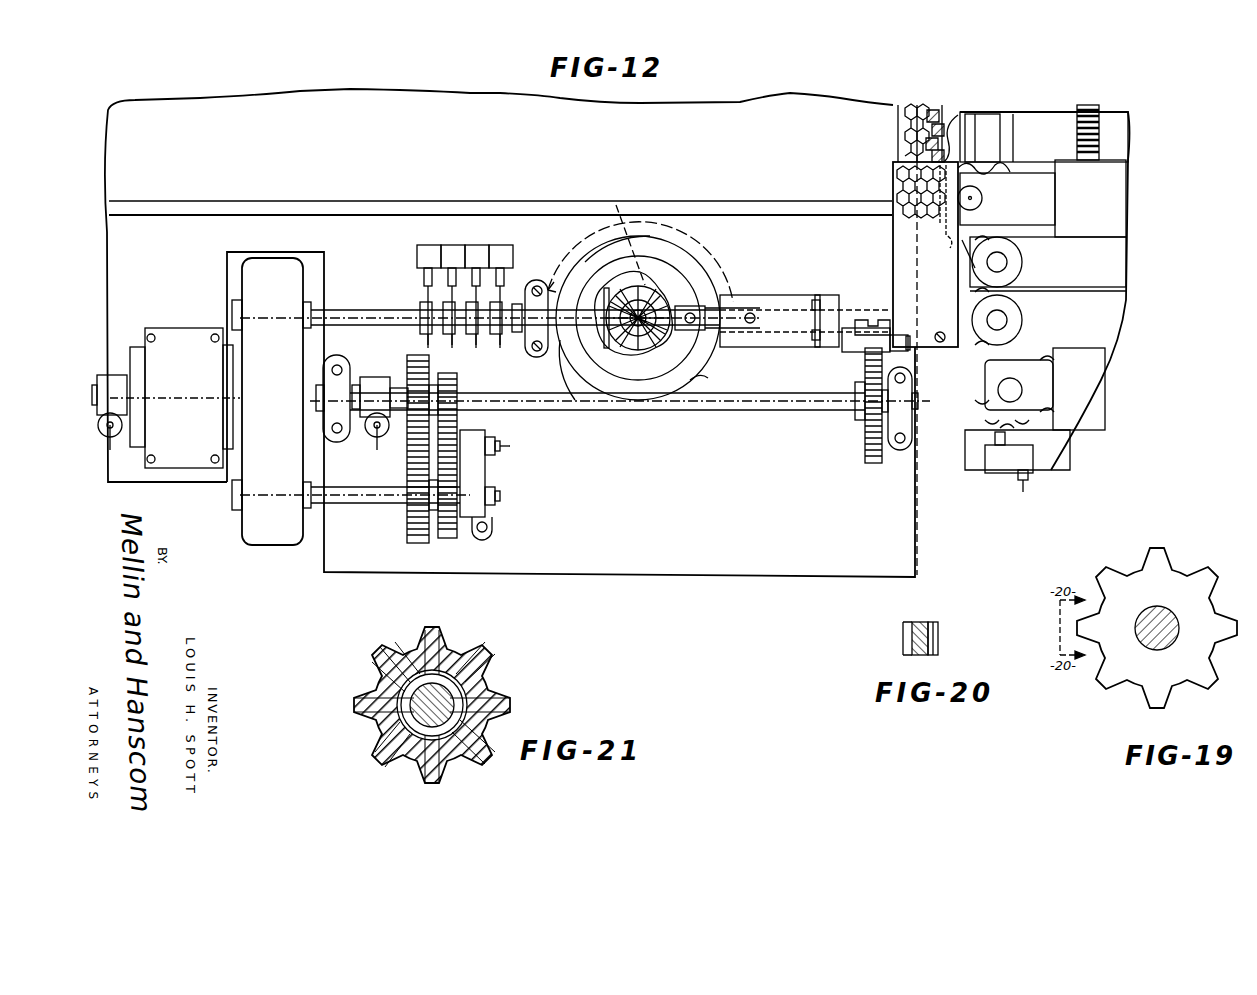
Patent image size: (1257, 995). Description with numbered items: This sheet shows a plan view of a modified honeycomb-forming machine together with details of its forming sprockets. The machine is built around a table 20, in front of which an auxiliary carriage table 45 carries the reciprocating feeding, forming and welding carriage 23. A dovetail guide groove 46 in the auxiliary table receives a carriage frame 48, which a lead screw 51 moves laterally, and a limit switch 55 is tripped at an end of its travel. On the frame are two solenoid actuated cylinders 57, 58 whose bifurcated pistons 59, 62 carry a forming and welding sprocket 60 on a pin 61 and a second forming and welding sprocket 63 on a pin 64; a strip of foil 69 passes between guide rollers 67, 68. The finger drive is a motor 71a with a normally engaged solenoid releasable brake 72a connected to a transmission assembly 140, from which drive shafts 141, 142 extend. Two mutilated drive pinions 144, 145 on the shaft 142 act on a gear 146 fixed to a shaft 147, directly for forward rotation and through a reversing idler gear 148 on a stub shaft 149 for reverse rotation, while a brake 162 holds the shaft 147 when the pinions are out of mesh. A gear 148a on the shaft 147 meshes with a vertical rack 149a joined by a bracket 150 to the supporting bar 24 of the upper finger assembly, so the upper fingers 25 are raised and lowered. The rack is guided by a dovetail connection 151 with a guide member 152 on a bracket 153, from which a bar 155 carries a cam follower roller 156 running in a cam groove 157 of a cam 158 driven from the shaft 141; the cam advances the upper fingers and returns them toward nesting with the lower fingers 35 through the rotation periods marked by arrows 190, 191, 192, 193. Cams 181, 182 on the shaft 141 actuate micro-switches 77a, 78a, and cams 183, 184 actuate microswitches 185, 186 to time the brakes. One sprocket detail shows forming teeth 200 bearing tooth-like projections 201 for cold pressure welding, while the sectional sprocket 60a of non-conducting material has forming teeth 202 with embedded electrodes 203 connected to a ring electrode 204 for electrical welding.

In FIG. 12, the table 20 is at (538, 138).
In FIG. 12, the carriage 23 is at (1136, 257).
In FIG. 12, the supporting bar 24 is at (892, 243).
In FIG. 12, the upper fingers 25 is at (925, 145).
In FIG. 12, the lower fingers 35 is at (944, 128).
In FIG. 12, the auxiliary carriage table 45 is at (1120, 112).
In FIG. 12, the dovetail guide groove 46 is at (1005, 118).
In FIG. 12, the carriage frame 48 is at (1118, 316).
In FIG. 12, the lead screw 51 is at (1092, 108).
In FIG. 12, the limit switch 55 is at (1003, 465).
In FIG. 12, the cylinder 57 is at (1112, 189).
In FIG. 12, the cylinder 58 is at (1086, 383).
In FIG. 12, the piston 59 is at (1028, 173).
In FIG. 12, the forming and welding sprocket 60 is at (995, 165).
In FIG. 19, the forming and welding sprocket 60 is at (1210, 612).
In FIG. 21, the sprocket 60a is at (495, 688).
In FIG. 12, the pin 61 is at (982, 196).
In FIG. 19, the pin 61 is at (1178, 634).
In FIG. 12, the piston 62 is at (1040, 370).
In FIG. 12, the second forming and welding sprocket 63 is at (1008, 358).
In FIG. 12, the pin 64 is at (1022, 392).
In FIG. 12, the guide roller 67 is at (1008, 256).
In FIG. 12, the guide roller 68 is at (1012, 318).
In FIG. 12, the strip of foil 69 is at (1088, 268).
In FIG. 12, the motor 71a is at (170, 345).
In FIG. 12, the brake 72a is at (112, 375).
In FIG. 12, the micro-switch 77a is at (478, 255).
In FIG. 12, the micro-switch 78a is at (502, 256).
In FIG. 12, the transmission assembly 140 is at (296, 258).
In FIG. 12, the drive shaft 141 is at (372, 310).
In FIG. 12, the drive shaft 142 is at (362, 487).
In FIG. 12, the mutilated drive pinion 144 is at (407, 540).
In FIG. 12, the mutilated drive pinion 145 is at (448, 538).
In FIG. 12, the gear 146 is at (408, 386).
In FIG. 12, the shaft 147 is at (758, 410).
In FIG. 12, the reversing idler gear 148 is at (460, 445).
In FIG. 12, the gear 148a is at (865, 455).
In FIG. 12, the stub shaft 149 is at (500, 446).
In FIG. 12, the rack 149a is at (856, 352).
In FIG. 12, the bracket 150 is at (458, 380).
In FIG. 12, the dovetail connection 151 is at (868, 322).
In FIG. 12, the guide member 152 is at (848, 296).
In FIG. 12, the bracket 153 is at (798, 296).
In FIG. 12, the bar 155 is at (700, 300).
In FIG. 12, the cam follower roller 156 is at (705, 272).
In FIG. 12, the cam groove 157 is at (682, 256).
In FIG. 12, the cam 158 is at (710, 372).
In FIG. 12, the brake 162 is at (382, 378).
In FIG. 12, the cam 181 is at (478, 350).
In FIG. 12, the cam 182 is at (502, 350).
In FIG. 12, the cam 183 is at (426, 343).
In FIG. 12, the cam 184 is at (444, 350).
In FIG. 12, the microswitch 185 is at (422, 245).
In FIG. 12, the microswitch 186 is at (456, 250).
In FIG. 12, the arrow 190 is at (700, 258).
In FIG. 12, the arrow 191 is at (660, 230).
In FIG. 12, the arrow 192 is at (590, 240).
In FIG. 12, the arrow 193 is at (548, 280).
In FIG. 19, the forming teeth 200 is at (1175, 562).
In FIG. 20, the forming teeth 200 is at (934, 622).
In FIG. 19, the tooth-like projections 201 is at (1218, 578).
In FIG. 20, the tooth-like projections 201 is at (918, 624).
In FIG. 21, the forming teeth 202 is at (450, 650).
In FIG. 21, the electrodes 203 is at (428, 628).
In FIG. 21, the ring electrode 204 is at (490, 690).